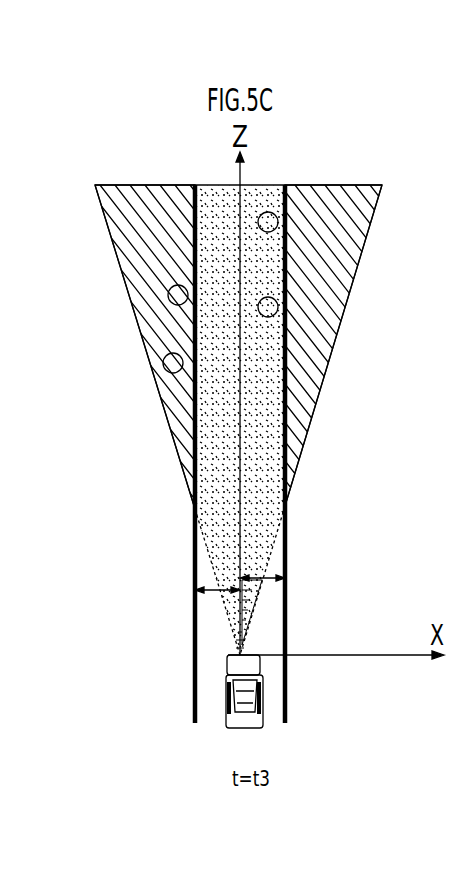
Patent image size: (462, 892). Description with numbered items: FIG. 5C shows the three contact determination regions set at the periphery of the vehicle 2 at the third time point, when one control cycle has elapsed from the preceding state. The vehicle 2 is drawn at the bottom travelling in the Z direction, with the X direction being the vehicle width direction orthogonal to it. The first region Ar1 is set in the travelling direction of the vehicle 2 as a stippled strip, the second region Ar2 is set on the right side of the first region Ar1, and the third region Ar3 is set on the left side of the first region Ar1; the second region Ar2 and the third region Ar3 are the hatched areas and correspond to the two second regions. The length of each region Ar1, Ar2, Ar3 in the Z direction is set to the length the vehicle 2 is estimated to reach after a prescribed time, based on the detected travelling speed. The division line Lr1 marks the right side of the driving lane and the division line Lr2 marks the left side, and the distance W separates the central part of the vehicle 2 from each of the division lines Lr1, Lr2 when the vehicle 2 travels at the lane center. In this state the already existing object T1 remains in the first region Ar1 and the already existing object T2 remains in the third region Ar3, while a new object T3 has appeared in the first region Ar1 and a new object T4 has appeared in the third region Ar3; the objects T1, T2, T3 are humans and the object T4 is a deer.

The object T1 is at (278, 306).
The object T2 is at (163, 363).
The object T3 is at (278, 221).
The object T4 is at (168, 298).
The first region Ar1 is at (264, 184).
The second region Ar2 is at (356, 258).
The third region Ar3 is at (121, 266).
The division line Lr1 is at (288, 530).
The division line Lr2 is at (193, 556).
The distance W is at (240, 602).
The vehicle 2 is at (262, 690).